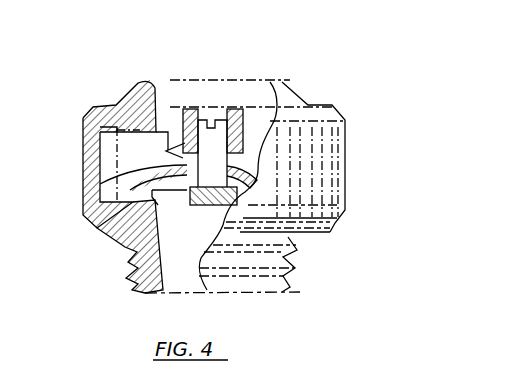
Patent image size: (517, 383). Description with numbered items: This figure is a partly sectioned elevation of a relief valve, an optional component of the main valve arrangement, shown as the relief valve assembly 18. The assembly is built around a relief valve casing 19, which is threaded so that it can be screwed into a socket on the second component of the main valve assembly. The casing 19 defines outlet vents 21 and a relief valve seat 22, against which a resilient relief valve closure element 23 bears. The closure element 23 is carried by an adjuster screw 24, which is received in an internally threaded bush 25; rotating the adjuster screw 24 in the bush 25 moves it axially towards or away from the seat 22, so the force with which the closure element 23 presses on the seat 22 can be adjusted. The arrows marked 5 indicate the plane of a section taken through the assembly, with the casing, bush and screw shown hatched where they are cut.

The section line 5- 5 is at (215, 127).
The relief valve assembly 18 is at (323, 257).
The relief valve casing 19 is at (83, 229).
The outlet vents 21 is at (160, 117).
The relief valve seat 22 is at (127, 228).
The resilient relief valve closure element 23 is at (150, 173).
The adjuster screw 24 is at (222, 123).
The internally threaded bush 25 is at (192, 110).